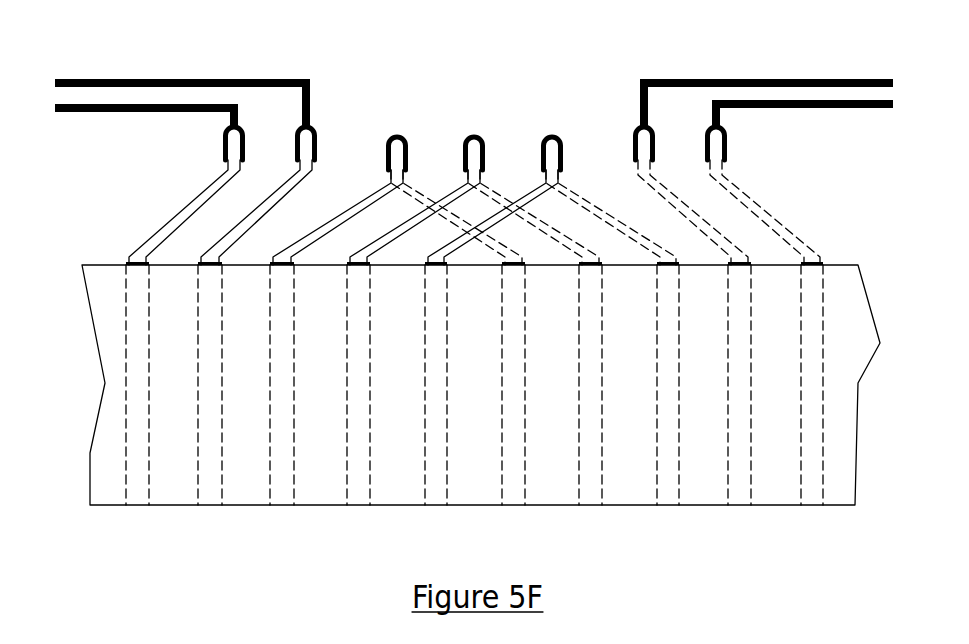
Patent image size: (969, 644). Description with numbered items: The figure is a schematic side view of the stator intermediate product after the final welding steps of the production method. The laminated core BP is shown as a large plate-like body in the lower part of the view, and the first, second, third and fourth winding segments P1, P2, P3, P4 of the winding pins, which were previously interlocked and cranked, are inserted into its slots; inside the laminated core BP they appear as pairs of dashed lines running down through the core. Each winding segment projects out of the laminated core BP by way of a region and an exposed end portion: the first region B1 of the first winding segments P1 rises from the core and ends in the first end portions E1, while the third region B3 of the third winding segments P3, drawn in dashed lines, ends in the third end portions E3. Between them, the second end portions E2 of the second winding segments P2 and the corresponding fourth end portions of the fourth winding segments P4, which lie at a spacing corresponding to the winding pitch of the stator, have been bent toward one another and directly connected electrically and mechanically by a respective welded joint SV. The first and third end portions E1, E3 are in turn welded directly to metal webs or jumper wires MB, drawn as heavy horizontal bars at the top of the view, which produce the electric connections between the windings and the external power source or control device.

The metal web MB is at (158, 108).
The welded joint SV is at (550, 147).
The first exposed end portion E1 is at (307, 152).
The second exposed end portion E2 is at (400, 150).
The third exposed end portion E3 is at (645, 152).
The first region B1 is at (260, 213).
The third region B3 is at (690, 215).
The laminated core BP is at (112, 302).
The first winding segment P1 is at (207, 368).
The second winding segment P2 is at (278, 368).
The third winding segment P3 is at (815, 368).
The fourth winding segment P4 is at (595, 368).